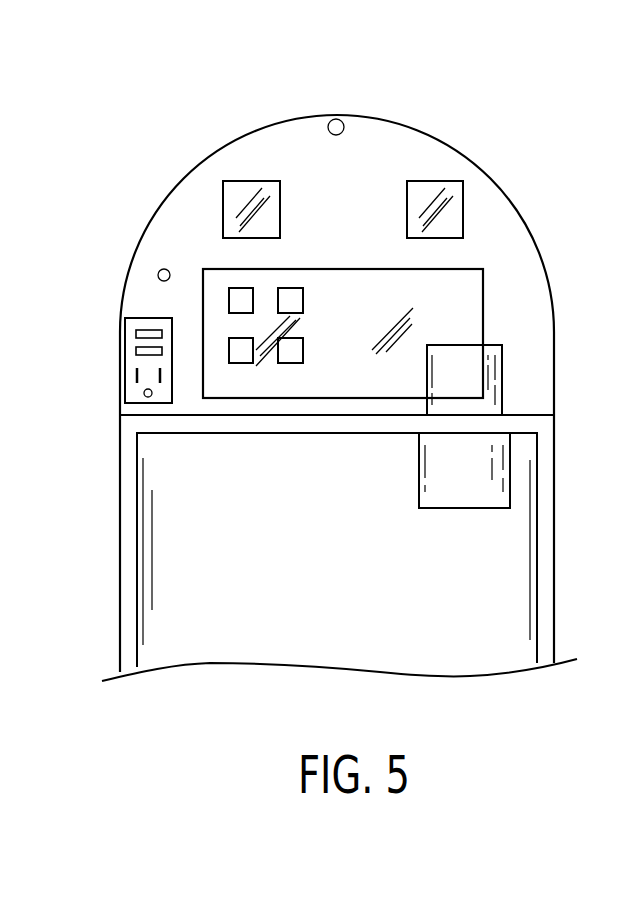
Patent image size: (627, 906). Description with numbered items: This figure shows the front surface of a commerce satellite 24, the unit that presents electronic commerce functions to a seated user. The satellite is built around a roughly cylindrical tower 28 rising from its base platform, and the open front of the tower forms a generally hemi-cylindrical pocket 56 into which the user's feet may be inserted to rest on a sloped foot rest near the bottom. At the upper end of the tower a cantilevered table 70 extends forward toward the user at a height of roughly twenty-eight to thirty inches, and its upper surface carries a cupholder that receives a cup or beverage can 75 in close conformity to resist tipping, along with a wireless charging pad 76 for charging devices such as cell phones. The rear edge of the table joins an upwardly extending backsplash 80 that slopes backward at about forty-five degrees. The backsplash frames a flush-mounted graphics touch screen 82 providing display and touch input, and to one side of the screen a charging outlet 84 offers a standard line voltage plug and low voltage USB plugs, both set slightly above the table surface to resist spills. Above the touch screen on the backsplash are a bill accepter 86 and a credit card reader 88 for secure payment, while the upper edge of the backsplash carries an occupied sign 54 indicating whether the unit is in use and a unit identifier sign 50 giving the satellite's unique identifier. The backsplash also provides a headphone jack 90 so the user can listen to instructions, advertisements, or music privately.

The commerce satellite 24 is at (336, 355).
The tower 28 is at (556, 505).
The unit identifier sign 50 is at (329, 122).
The occupied sign 54 is at (402, 154).
The hemi-cylindrical pocket 56 is at (495, 561).
The cantilevered table 70 is at (525, 415).
The cup or beverage can 75 is at (495, 368).
The wireless charging pad 76 is at (148, 413).
The backsplash 80 is at (503, 217).
The graphics touch screen 82 is at (472, 297).
The charging outlet 84 is at (148, 318).
The bill accepter 86 is at (437, 181).
The credit card reader 88 is at (250, 181).
The headphone jack 90 is at (158, 268).